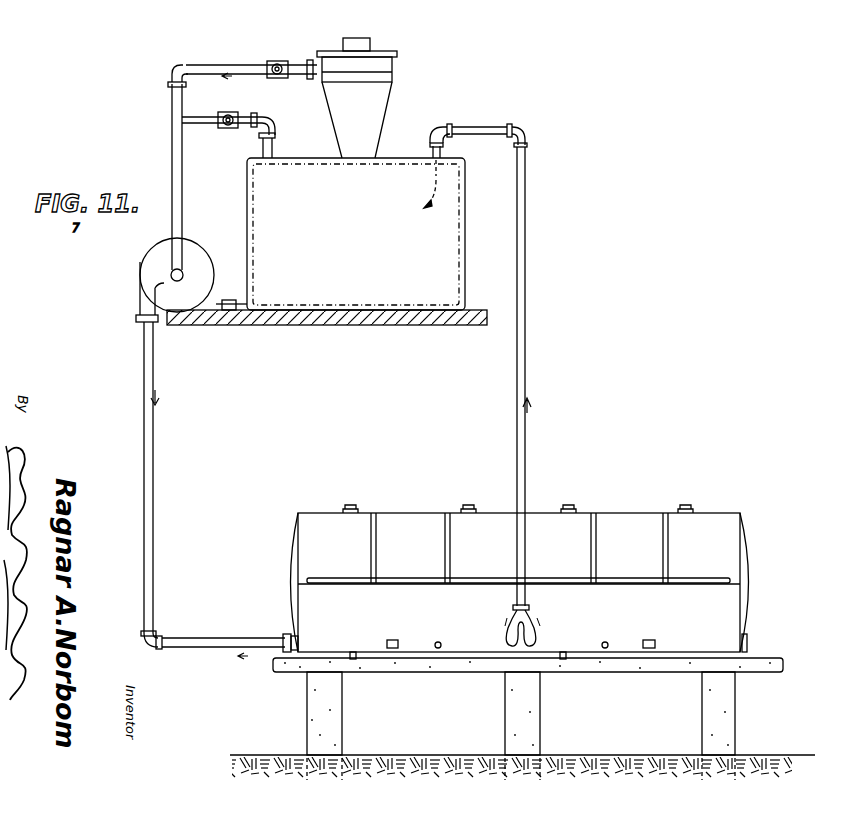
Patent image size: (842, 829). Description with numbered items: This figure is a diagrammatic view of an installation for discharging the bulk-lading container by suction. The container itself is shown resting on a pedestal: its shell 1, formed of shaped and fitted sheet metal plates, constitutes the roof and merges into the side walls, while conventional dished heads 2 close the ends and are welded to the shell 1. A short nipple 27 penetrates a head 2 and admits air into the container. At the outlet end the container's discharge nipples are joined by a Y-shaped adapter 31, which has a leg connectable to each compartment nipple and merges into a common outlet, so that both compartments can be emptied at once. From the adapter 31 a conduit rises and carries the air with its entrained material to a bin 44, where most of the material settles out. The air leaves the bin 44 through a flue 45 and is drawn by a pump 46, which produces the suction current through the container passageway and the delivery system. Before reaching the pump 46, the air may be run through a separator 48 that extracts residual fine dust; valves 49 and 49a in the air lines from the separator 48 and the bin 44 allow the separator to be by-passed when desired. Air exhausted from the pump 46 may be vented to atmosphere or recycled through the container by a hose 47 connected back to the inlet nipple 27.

The shell 1 is at (618, 520).
The dished heads 2 is at (288, 570).
The inlet nipple 27 is at (290, 640).
The Y-shaped adapter 31 is at (530, 620).
The bin 44 is at (450, 293).
The flue 45 is at (200, 118).
The pump 46 is at (158, 274).
The hose 47 is at (152, 560).
The separator 48 is at (330, 136).
The valve 49 is at (276, 64).
The valve 49a is at (238, 150).